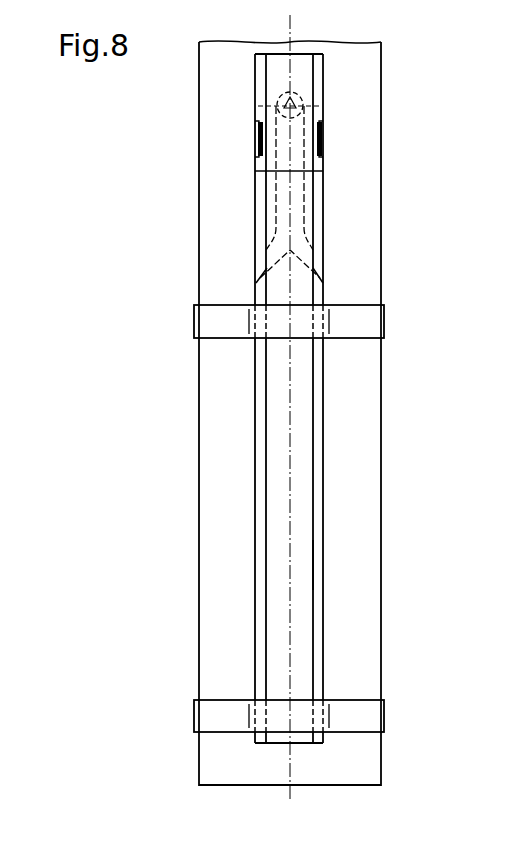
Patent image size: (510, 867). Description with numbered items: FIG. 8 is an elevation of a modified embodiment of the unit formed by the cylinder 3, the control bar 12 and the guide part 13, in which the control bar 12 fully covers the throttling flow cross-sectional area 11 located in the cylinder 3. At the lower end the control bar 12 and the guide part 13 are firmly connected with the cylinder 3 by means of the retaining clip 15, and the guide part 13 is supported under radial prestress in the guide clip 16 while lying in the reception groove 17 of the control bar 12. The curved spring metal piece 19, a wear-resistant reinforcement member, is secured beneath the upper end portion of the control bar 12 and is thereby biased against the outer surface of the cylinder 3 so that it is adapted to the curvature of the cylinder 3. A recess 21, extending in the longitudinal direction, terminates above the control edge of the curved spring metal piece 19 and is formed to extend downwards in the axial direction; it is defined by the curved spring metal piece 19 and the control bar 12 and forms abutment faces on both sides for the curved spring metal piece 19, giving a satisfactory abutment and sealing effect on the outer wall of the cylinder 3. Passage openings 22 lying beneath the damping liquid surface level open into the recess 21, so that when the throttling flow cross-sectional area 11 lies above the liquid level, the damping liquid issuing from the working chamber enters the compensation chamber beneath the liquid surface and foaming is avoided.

The cylinder 3 is at (381, 500).
The throttling flow cross-sectional area 11 is at (301, 97).
The control bar 12 is at (258, 441).
The guide part 13 is at (282, 500).
The retaining clip 15 is at (357, 716).
The guide clip 16 is at (352, 318).
The reception groove 17 is at (314, 563).
The curved spring metal piece 19 is at (322, 141).
The recess 21 is at (283, 205).
The passage openings 22 is at (257, 260).